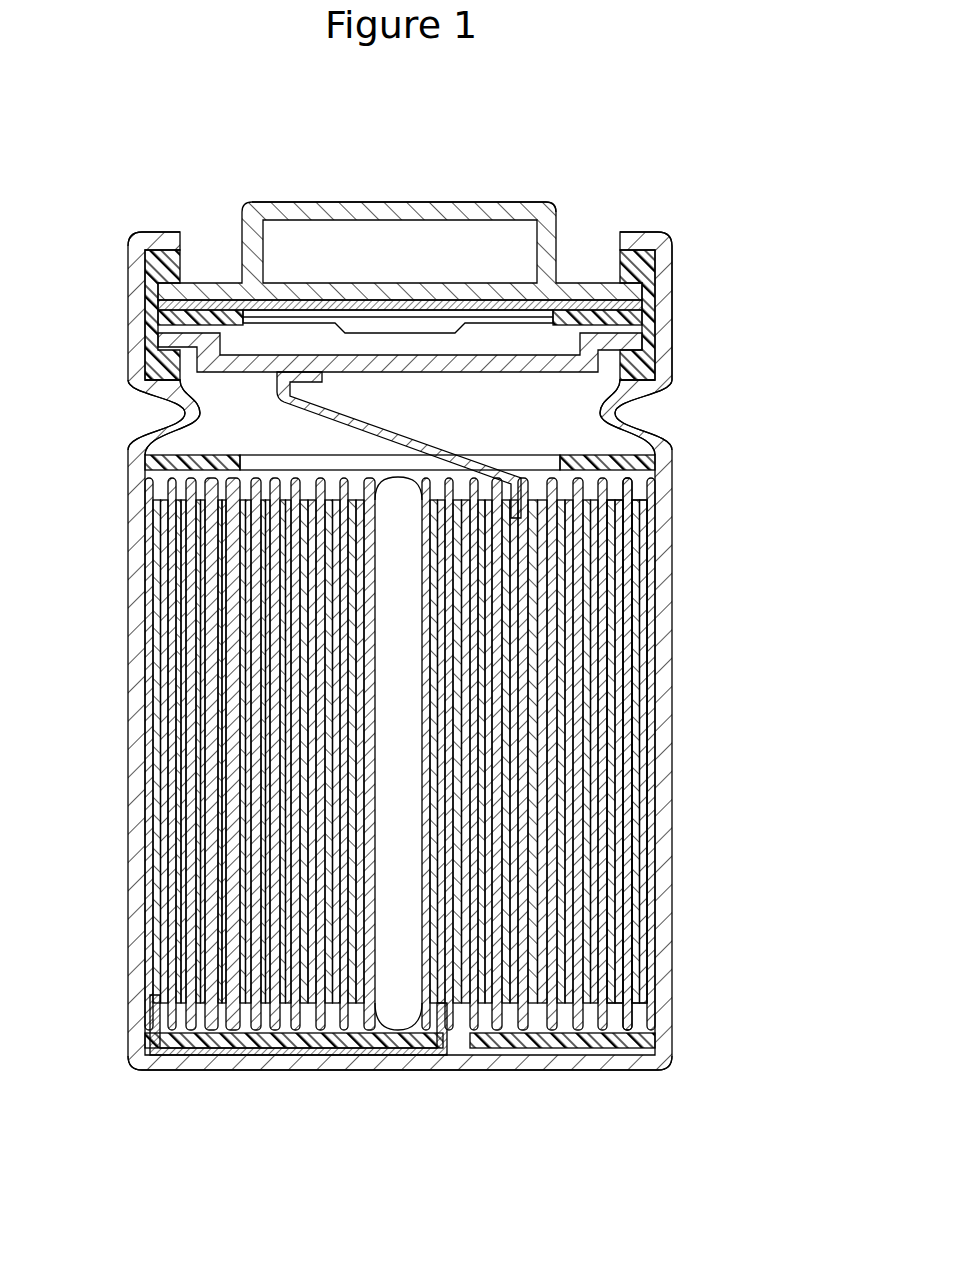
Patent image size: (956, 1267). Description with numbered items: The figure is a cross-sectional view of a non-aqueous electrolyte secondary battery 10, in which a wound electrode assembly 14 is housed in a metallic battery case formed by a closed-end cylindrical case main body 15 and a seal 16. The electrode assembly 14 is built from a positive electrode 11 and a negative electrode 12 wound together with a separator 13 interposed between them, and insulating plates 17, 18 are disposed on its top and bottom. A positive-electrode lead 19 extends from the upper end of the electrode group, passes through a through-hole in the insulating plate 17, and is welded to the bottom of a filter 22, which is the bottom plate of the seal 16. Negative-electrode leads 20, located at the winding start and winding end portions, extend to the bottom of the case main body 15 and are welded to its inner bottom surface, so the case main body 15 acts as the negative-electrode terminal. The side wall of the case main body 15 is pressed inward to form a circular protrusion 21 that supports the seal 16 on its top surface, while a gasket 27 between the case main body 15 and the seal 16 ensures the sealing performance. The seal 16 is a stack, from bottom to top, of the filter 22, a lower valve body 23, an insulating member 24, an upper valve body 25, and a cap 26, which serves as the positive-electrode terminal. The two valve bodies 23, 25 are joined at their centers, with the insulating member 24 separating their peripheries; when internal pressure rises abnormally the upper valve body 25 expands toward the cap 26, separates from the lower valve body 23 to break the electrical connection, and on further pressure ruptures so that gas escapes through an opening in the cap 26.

The non-aqueous electrolyte secondary battery 10 is at (678, 110).
The positive electrode 11 is at (618, 708).
The negative electrode 12 is at (637, 760).
The separator 13 is at (640, 800).
The electrode assembly 14 is at (770, 697).
The case main body 15 is at (668, 234).
The seal 16 is at (541, 202).
The insulating plate 17 is at (640, 462).
The insulating plate 18 is at (658, 1040).
The positive-electrode lead 19 is at (200, 414).
The negative-electrode lead 20 is at (222, 1058).
The protrusion 21 is at (622, 410).
The filter 22 is at (650, 350).
The lower valve body 23 is at (335, 310).
The insulating member 24 is at (205, 310).
The upper valve body 25 is at (240, 300).
The cap 26 is at (490, 202).
The gasket 27 is at (655, 266).